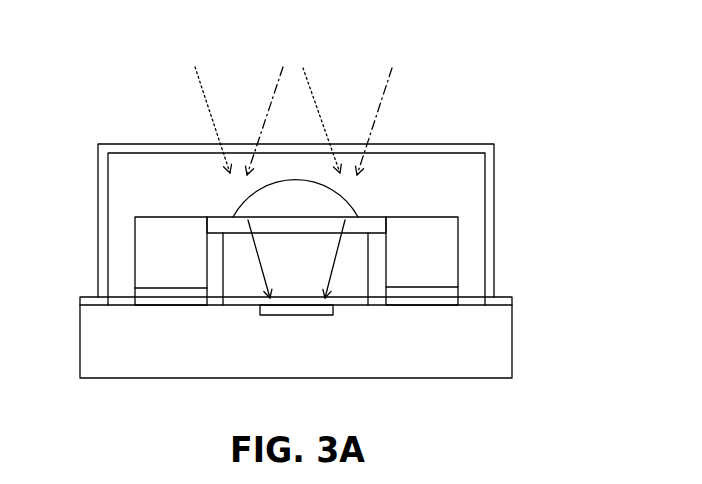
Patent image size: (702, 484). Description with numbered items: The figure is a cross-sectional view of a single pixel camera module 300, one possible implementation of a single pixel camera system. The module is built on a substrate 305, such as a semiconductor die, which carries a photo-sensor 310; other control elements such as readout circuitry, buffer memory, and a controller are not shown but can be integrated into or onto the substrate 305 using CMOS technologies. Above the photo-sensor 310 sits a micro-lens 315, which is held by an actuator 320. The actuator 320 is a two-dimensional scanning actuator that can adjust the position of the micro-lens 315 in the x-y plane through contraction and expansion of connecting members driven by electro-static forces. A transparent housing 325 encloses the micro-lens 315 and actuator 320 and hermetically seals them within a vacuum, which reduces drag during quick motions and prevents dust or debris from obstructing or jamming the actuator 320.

The single pixel camera module 300 is at (565, 102).
The substrate 305 is at (472, 355).
The photo-sensor 310 is at (285, 316).
The micro-lens 315 is at (309, 210).
The actuator 320 is at (185, 265).
The housing 325 is at (118, 143).